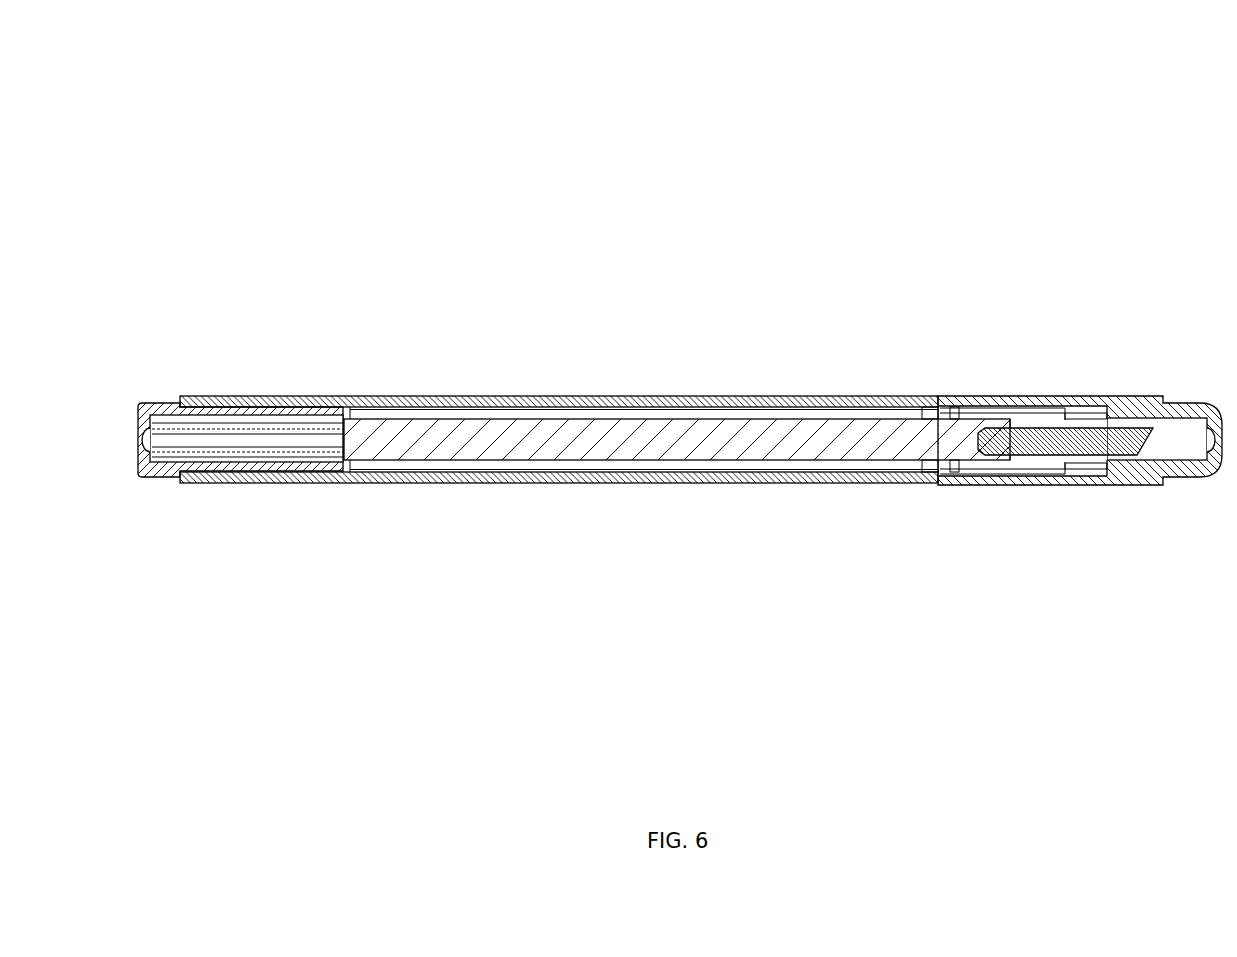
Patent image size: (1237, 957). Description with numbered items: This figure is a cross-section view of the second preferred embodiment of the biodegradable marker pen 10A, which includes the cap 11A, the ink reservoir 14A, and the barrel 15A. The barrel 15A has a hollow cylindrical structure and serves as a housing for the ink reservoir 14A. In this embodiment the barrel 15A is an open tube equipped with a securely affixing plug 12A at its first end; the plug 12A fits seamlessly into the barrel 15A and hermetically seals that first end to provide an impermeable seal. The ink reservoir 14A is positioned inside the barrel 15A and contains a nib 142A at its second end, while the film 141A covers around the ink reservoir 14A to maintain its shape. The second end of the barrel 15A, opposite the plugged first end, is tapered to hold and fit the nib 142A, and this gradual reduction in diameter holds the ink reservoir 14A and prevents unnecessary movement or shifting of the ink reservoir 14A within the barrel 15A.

The biodegradable marker pen 10A is at (668, 360).
The cap 11A is at (1133, 398).
The plug 12A is at (150, 476).
The ink reservoir 14A is at (748, 454).
The film 141A is at (623, 419).
The nib 142A is at (1070, 455).
The barrel 15A is at (535, 481).